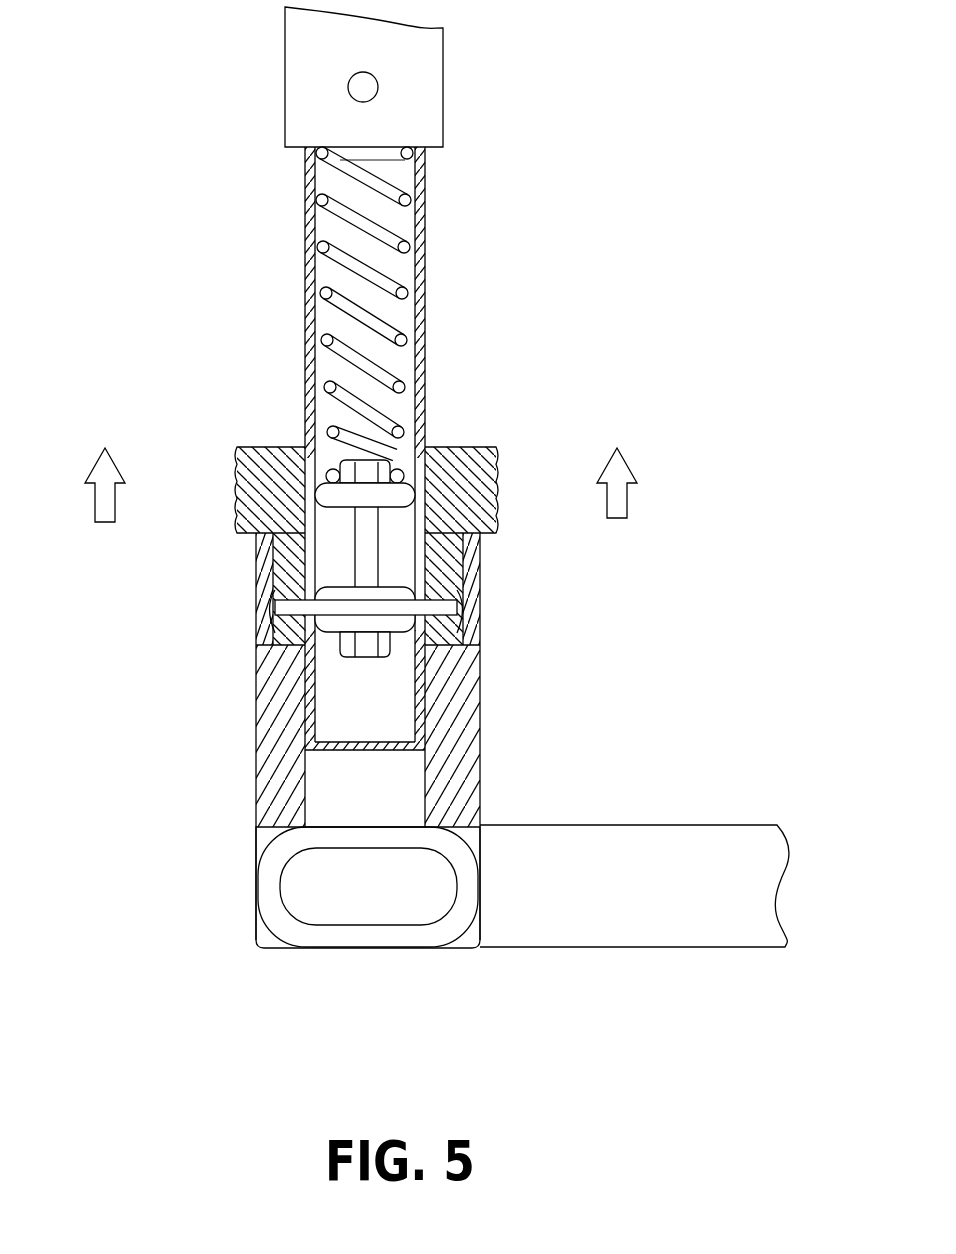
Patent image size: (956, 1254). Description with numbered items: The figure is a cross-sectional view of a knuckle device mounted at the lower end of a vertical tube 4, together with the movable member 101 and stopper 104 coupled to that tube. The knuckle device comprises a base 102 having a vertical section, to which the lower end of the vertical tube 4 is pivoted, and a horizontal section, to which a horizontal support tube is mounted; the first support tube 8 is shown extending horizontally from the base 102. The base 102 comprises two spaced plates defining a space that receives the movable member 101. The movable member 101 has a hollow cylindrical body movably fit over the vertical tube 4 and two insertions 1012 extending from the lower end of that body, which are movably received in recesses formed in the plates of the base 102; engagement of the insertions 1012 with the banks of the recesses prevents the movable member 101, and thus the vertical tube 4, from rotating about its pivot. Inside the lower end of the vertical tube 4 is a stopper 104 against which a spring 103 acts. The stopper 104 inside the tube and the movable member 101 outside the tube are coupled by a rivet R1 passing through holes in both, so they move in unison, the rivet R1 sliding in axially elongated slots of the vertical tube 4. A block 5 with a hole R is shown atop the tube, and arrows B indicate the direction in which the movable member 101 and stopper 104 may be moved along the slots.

The mounting block 5 is at (423, 70).
The hole R is at (348, 87).
The vertical tube 4 is at (308, 222).
The spring 103 is at (400, 230).
The movable member 101 is at (468, 463).
The insertions 1012 is at (463, 562).
The base 102 is at (270, 745).
The stopper 104 is at (365, 547).
The rivet R1 is at (443, 610).
The first support tube 8 is at (617, 907).
The direction arrow B is at (361, 485).